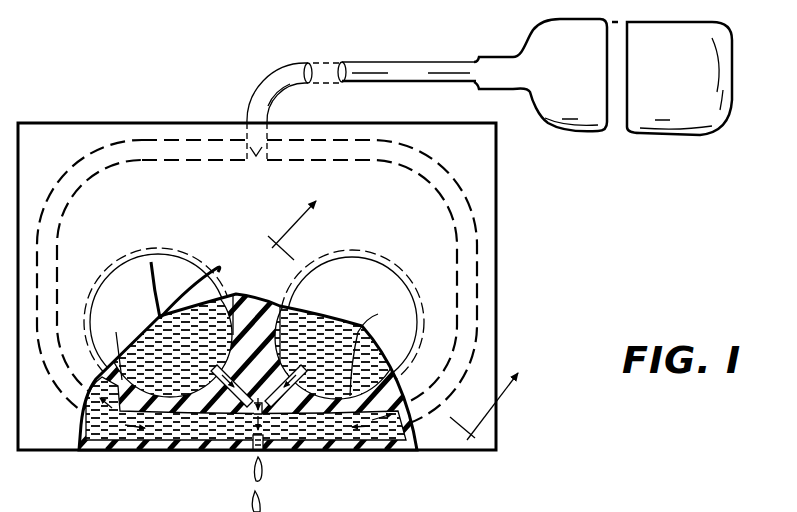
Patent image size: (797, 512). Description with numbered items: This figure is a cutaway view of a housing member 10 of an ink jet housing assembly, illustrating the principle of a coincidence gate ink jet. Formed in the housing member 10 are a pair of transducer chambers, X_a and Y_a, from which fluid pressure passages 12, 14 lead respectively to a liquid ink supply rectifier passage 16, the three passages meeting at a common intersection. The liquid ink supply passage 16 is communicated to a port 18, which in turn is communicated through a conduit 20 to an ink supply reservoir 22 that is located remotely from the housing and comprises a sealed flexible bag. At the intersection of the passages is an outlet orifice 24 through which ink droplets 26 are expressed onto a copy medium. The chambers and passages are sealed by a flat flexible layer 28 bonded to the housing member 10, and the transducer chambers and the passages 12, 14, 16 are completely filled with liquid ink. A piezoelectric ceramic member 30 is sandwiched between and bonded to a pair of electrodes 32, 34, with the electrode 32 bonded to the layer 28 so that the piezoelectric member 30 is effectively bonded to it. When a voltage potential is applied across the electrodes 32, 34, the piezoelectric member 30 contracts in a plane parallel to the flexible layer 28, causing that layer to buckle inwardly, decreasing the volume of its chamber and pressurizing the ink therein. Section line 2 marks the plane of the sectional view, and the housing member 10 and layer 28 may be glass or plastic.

The housing member 10 is at (382, 445).
The fluid pressure passage 12 is at (213, 376).
The fluid pressure passage 14 is at (293, 372).
The liquid ink supply rectifier passage 16 is at (160, 424).
The port 18 is at (254, 150).
The conduit 20 is at (403, 68).
The ink supply reservoir 22 is at (705, 88).
The outlet orifice 24 is at (261, 454).
The ink droplets 26 is at (250, 503).
The flat flexible layer 28 is at (50, 430).
The piezoelectric ceramic member 30 is at (163, 267).
The electrode 32 is at (192, 277).
The electrode 34 is at (133, 283).
The section line 2 is at (401, 307).